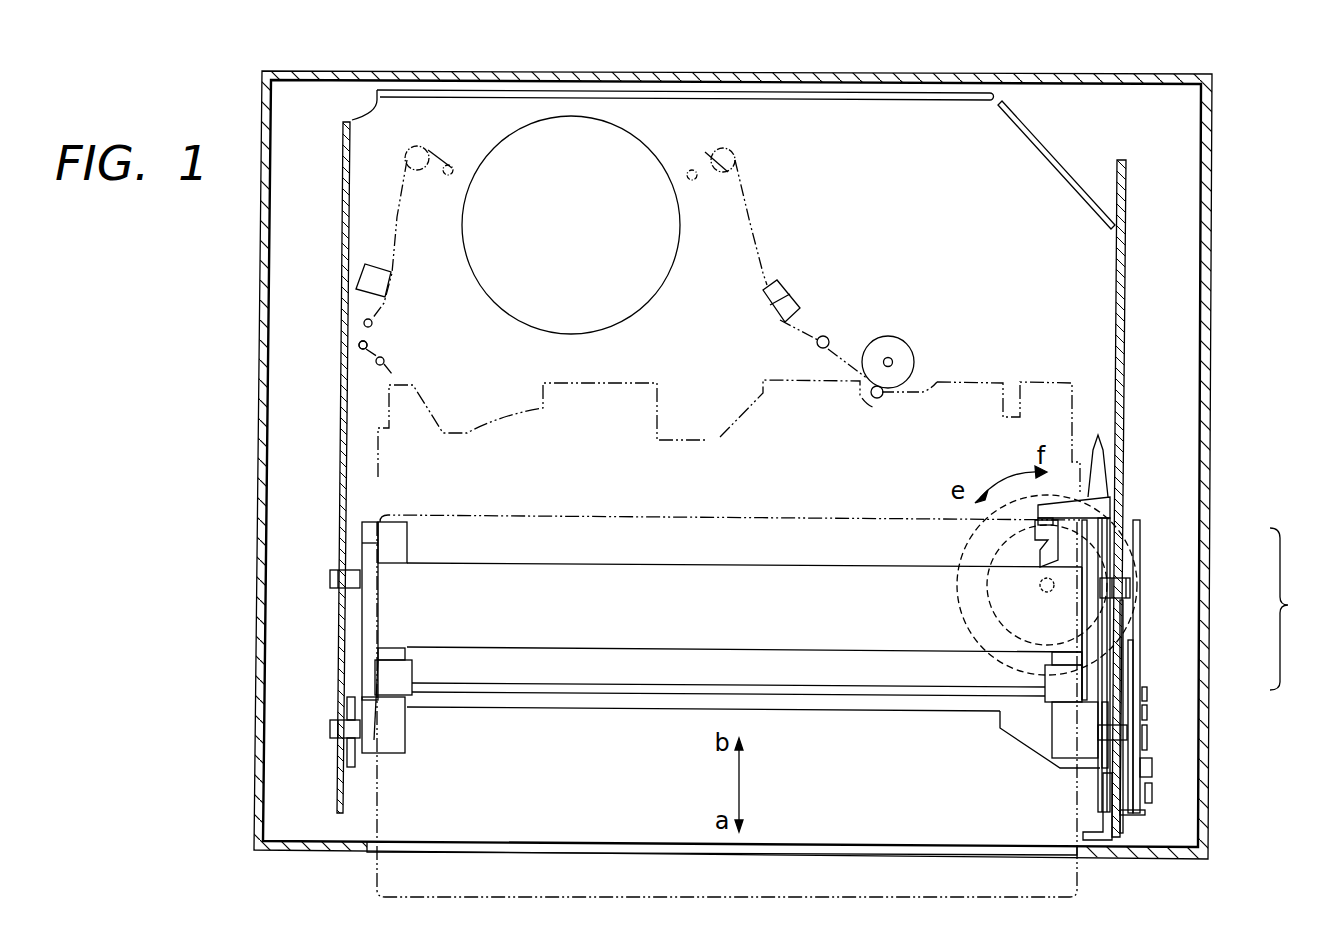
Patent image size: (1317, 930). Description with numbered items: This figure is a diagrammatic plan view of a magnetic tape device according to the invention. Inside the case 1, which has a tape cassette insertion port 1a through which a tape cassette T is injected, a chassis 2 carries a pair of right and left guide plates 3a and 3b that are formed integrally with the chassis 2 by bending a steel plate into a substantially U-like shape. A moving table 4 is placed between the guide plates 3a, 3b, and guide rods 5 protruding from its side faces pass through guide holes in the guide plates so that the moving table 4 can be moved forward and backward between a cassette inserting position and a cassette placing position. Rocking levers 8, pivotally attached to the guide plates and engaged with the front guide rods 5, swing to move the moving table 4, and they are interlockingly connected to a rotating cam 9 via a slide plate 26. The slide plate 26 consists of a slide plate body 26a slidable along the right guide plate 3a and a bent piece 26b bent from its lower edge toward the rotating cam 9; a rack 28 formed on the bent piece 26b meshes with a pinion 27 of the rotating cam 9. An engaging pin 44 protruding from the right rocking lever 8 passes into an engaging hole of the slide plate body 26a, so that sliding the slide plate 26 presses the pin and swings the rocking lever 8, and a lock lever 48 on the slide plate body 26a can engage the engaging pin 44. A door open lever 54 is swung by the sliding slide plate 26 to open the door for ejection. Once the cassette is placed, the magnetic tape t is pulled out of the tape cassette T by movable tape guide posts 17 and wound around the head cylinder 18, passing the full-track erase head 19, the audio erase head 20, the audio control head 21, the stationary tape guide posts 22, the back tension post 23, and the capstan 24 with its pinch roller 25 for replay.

The case 1 is at (258, 491).
The tape cassette insertion port 1a is at (372, 853).
The chassis 2 is at (1040, 185).
The right guide plate 3a is at (1125, 405).
The left guide plate 3b is at (342, 440).
The moving table 4 is at (773, 530).
The guide rods 5 is at (330, 579).
The rocking levers 8 is at (351, 765).
The rotating cam 9 is at (950, 616).
The movable tape guide posts 17 is at (449, 164).
The head cylinder 18 is at (537, 308).
The full-track erase head 19 is at (376, 268).
The audio erase head 20 is at (784, 284).
The audio control head 21 is at (800, 303).
The stationary tape guide posts 22 is at (375, 361).
The back tension post 23 is at (368, 345).
The capstan 24 is at (872, 400).
The pinch roller 25 is at (900, 345).
The slide plate 26 is at (1292, 609).
The slide plate body 26a is at (1140, 545).
The bent piece 26b is at (1130, 665).
The pinion 27 is at (990, 556).
The rack 28 is at (1095, 612).
The engaging pin 44 is at (1152, 768).
The lock lever 48 is at (1150, 715).
The door open lever 54 is at (1105, 812).
The tape cassette T is at (702, 527).
The magnetic tape t is at (755, 222).